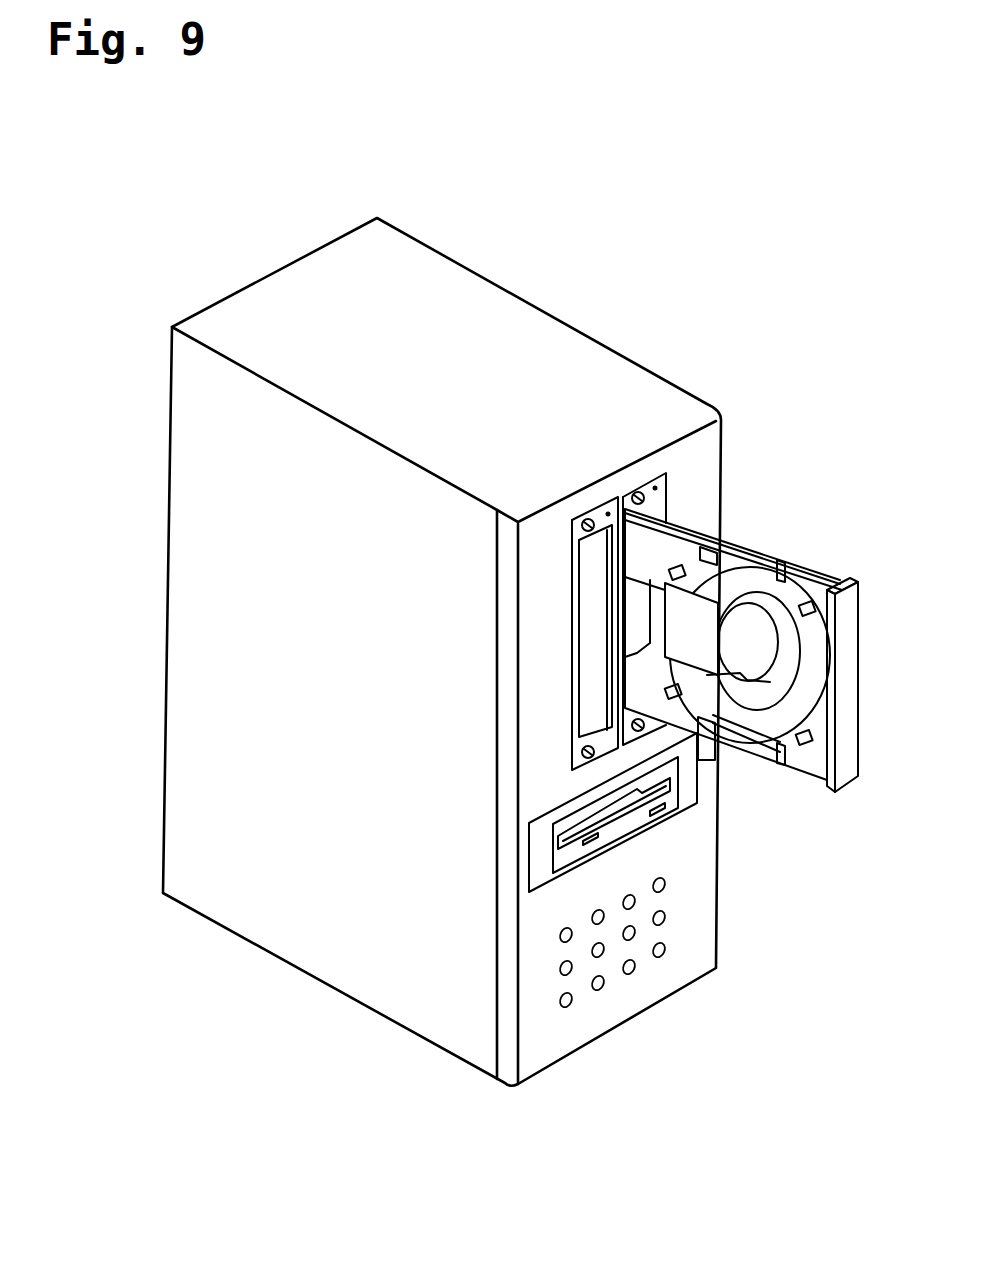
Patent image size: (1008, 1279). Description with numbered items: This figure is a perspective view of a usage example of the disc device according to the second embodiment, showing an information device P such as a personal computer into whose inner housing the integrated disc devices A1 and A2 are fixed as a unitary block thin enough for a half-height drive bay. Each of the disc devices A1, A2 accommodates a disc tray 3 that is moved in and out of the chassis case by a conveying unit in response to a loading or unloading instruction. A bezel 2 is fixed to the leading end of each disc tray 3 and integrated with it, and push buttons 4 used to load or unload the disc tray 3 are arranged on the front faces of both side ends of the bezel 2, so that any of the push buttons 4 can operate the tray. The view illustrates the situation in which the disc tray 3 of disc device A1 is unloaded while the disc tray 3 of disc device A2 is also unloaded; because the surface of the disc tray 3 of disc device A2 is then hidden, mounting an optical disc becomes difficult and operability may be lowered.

The information device P is at (228, 635).
The bezel 2 is at (593, 603).
The disc tray 3 is at (748, 583).
The push buttons 4 is at (639, 497).
The disc device A1 is at (568, 643).
The disc device A2 is at (672, 510).